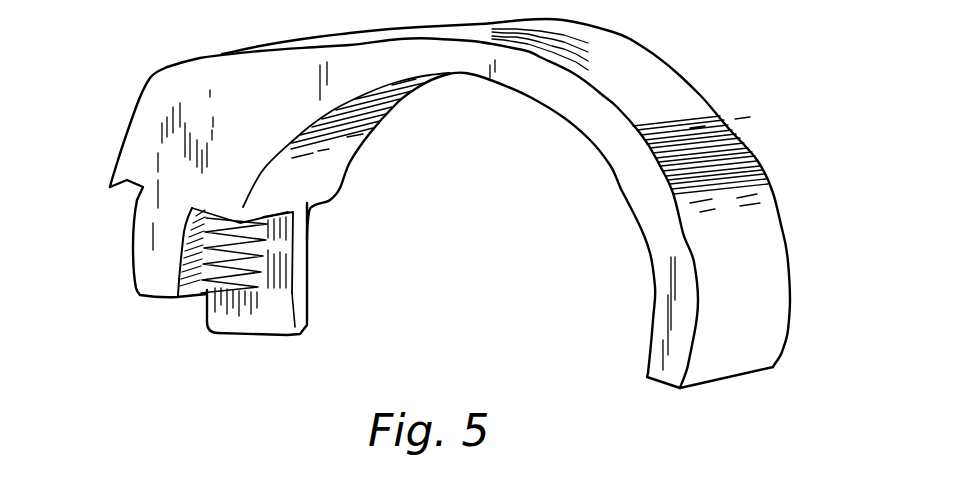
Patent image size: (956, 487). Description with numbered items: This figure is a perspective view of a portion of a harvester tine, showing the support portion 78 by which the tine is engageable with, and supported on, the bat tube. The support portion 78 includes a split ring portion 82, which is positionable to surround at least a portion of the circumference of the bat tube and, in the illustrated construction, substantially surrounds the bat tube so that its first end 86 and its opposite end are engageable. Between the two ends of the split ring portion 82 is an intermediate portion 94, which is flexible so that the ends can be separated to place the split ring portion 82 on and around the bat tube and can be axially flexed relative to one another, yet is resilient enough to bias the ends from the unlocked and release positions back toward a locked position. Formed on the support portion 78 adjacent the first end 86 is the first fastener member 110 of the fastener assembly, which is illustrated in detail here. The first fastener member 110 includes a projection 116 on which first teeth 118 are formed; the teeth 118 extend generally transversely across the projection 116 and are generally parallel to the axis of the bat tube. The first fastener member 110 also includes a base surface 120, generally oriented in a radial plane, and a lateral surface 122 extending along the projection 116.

The support portion 78 is at (799, 223).
The split ring portion 82 is at (758, 122).
The first end 86 is at (146, 73).
The intermediate portion 94 is at (781, 355).
The first fastener member 110 is at (127, 249).
The projection 116 is at (176, 301).
The first teeth 118 is at (272, 238).
The base surface 120 is at (126, 194).
The lateral surface 122 is at (312, 298).